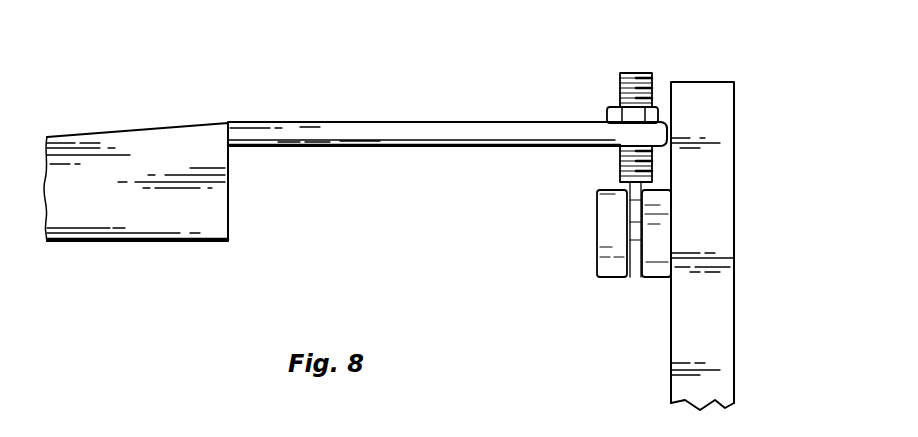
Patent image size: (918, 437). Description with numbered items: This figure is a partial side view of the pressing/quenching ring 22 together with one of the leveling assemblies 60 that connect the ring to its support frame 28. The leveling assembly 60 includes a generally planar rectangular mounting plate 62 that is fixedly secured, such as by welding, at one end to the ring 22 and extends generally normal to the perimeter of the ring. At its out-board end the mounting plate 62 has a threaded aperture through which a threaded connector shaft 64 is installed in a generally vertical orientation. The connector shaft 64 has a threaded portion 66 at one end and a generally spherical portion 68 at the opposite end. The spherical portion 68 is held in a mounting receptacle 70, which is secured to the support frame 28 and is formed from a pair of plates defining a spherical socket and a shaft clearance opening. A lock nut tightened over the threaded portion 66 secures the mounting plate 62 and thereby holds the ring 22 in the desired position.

The ring 22 is at (147, 130).
The support frame 28 is at (734, 95).
The leveling assembly 60 is at (660, 64).
The mounting plate 62 is at (392, 135).
The connector shaft 64 is at (620, 157).
The threaded portion 66 is at (620, 77).
The spherical portion 68 is at (633, 243).
The mounting receptacle 70 is at (594, 257).